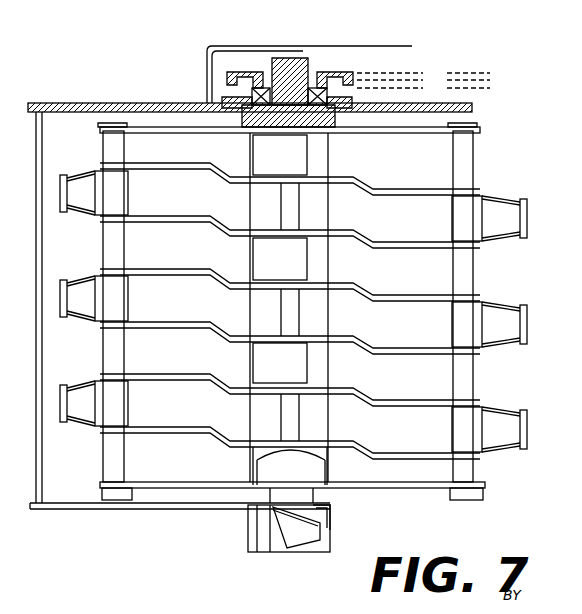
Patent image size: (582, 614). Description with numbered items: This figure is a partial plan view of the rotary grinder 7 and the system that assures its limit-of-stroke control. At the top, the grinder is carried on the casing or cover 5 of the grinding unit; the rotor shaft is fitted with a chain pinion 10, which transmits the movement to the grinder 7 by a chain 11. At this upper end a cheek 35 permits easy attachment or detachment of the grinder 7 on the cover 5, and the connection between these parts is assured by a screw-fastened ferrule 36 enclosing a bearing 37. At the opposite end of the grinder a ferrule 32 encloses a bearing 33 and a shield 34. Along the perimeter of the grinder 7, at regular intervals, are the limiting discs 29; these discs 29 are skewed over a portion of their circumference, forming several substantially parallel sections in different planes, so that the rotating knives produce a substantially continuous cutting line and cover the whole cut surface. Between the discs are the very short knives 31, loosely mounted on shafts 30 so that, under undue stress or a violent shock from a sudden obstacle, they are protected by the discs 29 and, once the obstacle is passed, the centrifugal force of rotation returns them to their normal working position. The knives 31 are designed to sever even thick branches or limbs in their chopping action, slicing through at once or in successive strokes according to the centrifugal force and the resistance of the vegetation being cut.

The cover 5 is at (140, 103).
The rotary grinder 7 is at (558, 110).
The chain pinion 10 is at (313, 70).
The chain 11 is at (468, 76).
The limiting discs 29 is at (413, 195).
The shafts 30 is at (470, 137).
The knives 31 is at (523, 210).
The ferrule 32 is at (310, 547).
The bearing 33 is at (282, 538).
The shield 34 is at (330, 512).
The cheek 35 is at (327, 127).
The screw-fastened ferrule 36 is at (235, 100).
The bearing 37 is at (265, 92).